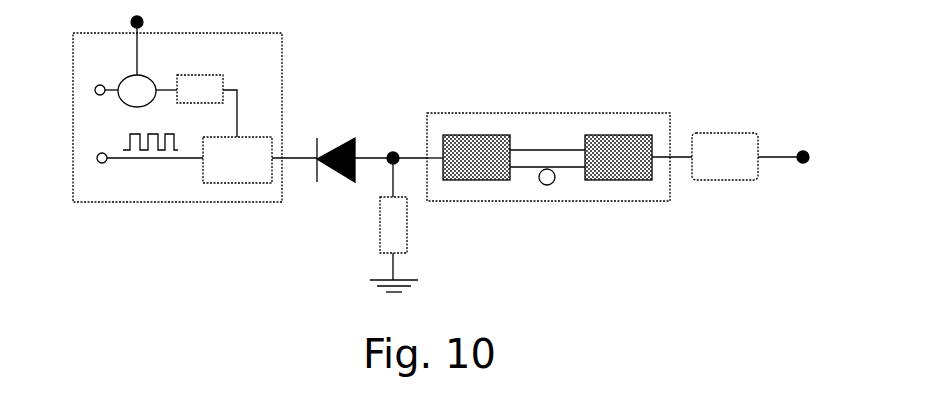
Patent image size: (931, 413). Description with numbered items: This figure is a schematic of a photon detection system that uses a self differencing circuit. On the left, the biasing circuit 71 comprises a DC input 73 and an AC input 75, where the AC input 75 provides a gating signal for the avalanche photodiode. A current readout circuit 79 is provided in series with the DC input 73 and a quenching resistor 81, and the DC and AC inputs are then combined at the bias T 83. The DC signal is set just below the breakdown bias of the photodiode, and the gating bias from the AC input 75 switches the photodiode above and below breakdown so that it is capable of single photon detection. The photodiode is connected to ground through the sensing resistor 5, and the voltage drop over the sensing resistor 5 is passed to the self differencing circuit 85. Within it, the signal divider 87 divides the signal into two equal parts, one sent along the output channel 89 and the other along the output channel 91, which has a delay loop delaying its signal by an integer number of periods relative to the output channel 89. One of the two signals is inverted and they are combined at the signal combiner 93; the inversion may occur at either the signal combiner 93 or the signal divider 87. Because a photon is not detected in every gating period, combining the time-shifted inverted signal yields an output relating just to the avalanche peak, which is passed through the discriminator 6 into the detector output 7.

The biasing circuit 71 is at (155, 215).
The DC input 73 is at (88, 88).
The AC input 75 is at (85, 166).
The current readout circuit 79 is at (130, 70).
The quenching resistor 81 is at (217, 65).
The bias T 83 is at (236, 183).
The sensing resistor 5 is at (405, 228).
The self differencing circuit 85 is at (605, 113).
The signal divider 87 is at (468, 140).
The output channel 89 is at (548, 140).
The output channel 91 is at (522, 180).
The signal combiner 93 is at (620, 180).
The discriminator 6 is at (725, 130).
The detector output 7 is at (805, 140).